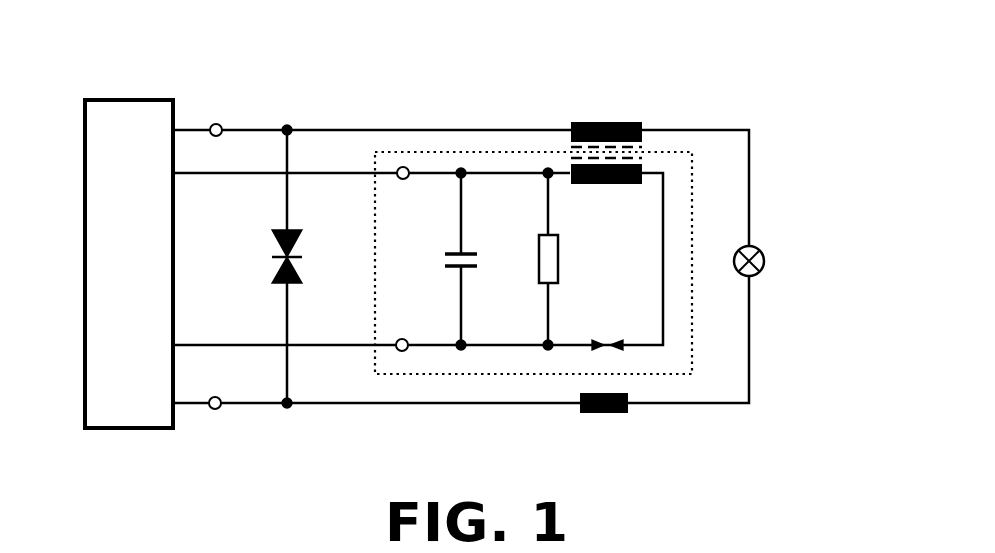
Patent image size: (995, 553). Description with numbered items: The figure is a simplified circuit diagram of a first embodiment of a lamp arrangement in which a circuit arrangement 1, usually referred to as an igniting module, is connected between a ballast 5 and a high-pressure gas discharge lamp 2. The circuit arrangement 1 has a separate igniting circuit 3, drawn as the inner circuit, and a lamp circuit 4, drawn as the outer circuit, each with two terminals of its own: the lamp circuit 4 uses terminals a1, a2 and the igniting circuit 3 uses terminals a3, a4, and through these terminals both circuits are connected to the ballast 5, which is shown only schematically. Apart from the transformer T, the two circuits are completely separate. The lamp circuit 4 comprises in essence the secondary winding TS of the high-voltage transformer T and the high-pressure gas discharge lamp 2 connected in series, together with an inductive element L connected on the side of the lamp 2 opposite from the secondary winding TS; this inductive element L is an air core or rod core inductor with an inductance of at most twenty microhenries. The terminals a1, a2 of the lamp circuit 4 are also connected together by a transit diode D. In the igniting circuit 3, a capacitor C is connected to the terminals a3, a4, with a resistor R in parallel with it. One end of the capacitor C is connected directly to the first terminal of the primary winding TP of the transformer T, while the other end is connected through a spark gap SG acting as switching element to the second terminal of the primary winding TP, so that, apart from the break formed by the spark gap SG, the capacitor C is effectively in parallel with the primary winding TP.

The circuit arrangement 1 is at (789, 126).
The high-pressure gas discharge lamp 2 is at (764, 261).
The igniting circuit 3 is at (374, 326).
The lamp circuit 4 is at (749, 168).
The ballast 5 is at (129, 110).
The terminal of lamp circuit a1 is at (216, 123).
The terminal of lamp circuit a2 is at (215, 409).
The terminal of igniting circuit a3 is at (403, 179).
The terminal of igniting circuit a4 is at (404, 339).
The transit diode D is at (290, 256).
The capacitor C is at (465, 252).
The resistor R is at (558, 264).
The spark gap SG is at (605, 332).
The high-voltage transformer T is at (630, 146).
The secondary winding TS is at (612, 122).
The primary winding TP is at (612, 184).
The inductive element L is at (605, 413).